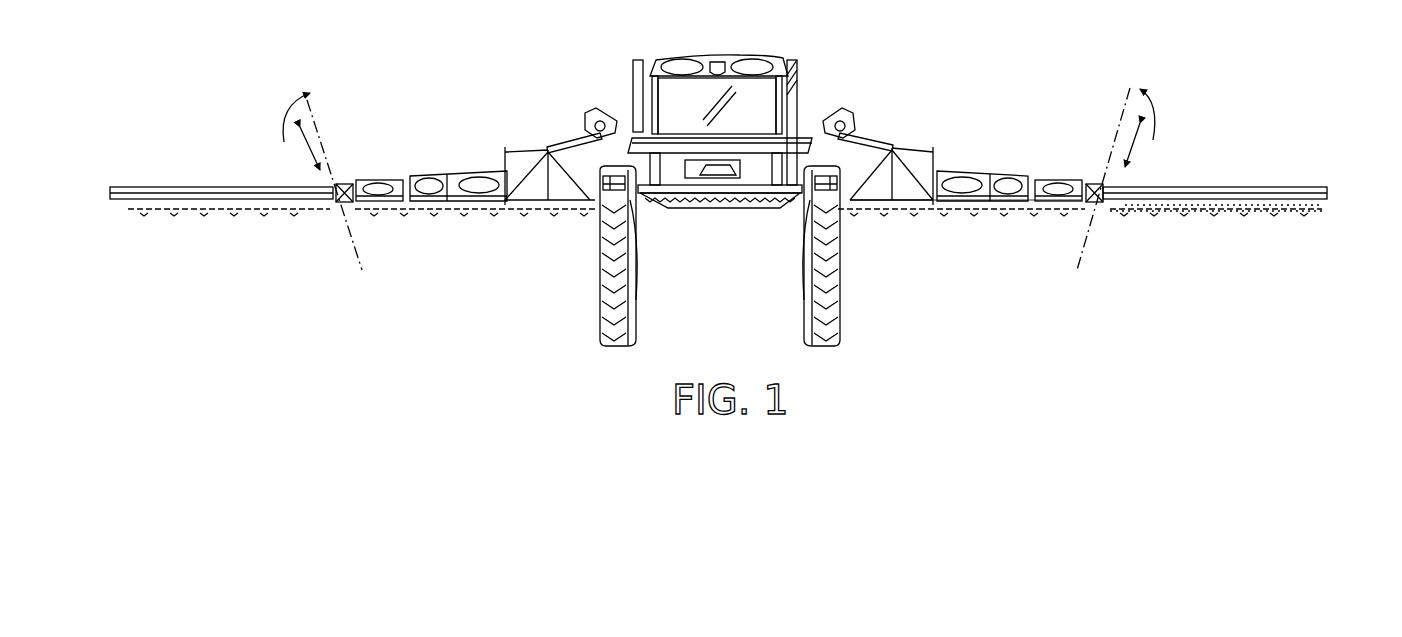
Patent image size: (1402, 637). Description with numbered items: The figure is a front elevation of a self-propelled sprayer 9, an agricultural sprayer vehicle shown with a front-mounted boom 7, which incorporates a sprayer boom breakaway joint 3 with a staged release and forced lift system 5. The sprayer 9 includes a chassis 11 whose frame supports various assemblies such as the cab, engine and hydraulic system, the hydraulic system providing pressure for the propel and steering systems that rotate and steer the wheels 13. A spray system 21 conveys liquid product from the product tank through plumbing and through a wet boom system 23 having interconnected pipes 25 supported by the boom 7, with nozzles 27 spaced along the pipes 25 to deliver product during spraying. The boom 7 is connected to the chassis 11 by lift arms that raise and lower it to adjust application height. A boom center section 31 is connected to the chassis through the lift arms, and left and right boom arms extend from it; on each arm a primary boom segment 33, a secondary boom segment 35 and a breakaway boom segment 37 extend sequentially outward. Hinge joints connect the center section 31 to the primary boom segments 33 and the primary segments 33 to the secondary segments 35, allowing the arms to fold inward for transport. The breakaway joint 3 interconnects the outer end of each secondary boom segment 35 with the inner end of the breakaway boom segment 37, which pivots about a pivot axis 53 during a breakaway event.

The sprayer boom breakaway joint 3 is at (365, 222).
The staged release and forced lift system 5 is at (331, 215).
The boom 7 is at (918, 132).
The self-propelled sprayer 9 is at (781, 53).
The chassis 11 is at (678, 212).
The wheels 13 is at (603, 278).
The spray system 21 is at (1314, 223).
The wet boom system 23 is at (1319, 208).
The pipes 25 is at (1219, 214).
The nozzles 27 is at (1214, 215).
The boom center section 31 is at (687, 128).
The primary boom segment 33 is at (555, 132).
The secondary boom segment 35 is at (440, 160).
The breakaway boom segment 37 is at (199, 178).
The pivot axis 53 is at (320, 147).